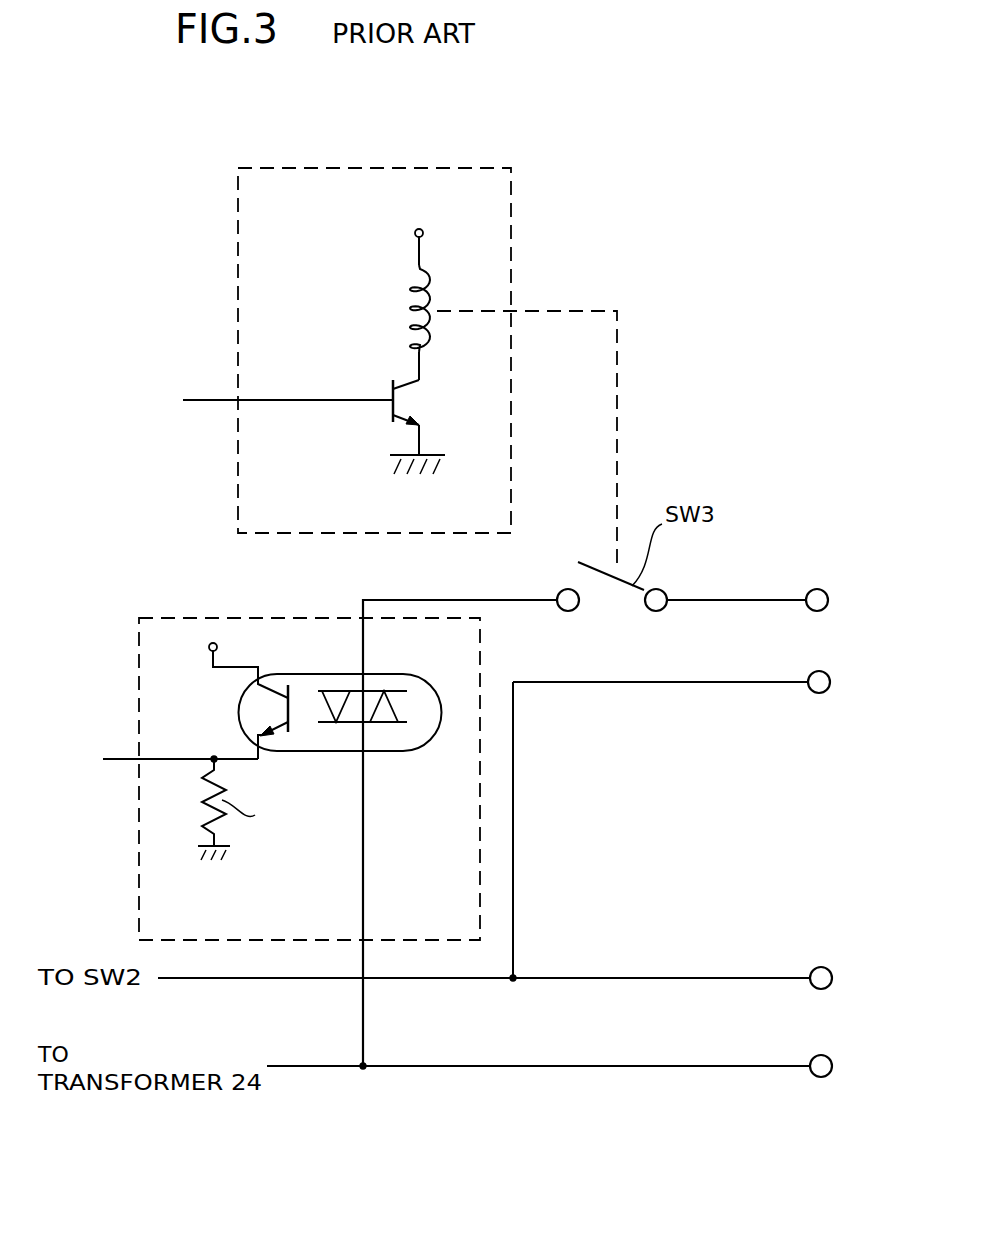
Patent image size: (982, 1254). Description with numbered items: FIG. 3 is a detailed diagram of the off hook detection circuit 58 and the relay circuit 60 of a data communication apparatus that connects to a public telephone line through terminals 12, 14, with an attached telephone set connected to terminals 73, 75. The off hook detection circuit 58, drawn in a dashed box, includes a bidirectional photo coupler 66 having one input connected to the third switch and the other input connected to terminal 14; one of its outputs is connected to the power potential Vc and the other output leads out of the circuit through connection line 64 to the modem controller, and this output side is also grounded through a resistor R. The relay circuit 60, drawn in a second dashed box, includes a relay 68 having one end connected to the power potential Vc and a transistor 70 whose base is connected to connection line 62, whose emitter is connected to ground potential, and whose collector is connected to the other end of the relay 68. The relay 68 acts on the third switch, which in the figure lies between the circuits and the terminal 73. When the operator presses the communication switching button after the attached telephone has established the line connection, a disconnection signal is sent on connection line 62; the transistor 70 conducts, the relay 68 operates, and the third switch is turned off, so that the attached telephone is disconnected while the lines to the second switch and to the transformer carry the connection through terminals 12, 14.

The relay circuit 60 is at (511, 252).
The relay 68 is at (427, 288).
The transistor 70 is at (415, 405).
The connection line 62 is at (200, 399).
The off hook detection circuit 58 is at (296, 617).
The bidirectional photo coupler 66 is at (416, 675).
The connection line 64 is at (120, 759).
The terminal 73 is at (822, 589).
The terminal 75 is at (830, 673).
The terminal 12 is at (828, 969).
The terminal 14 is at (829, 1057).